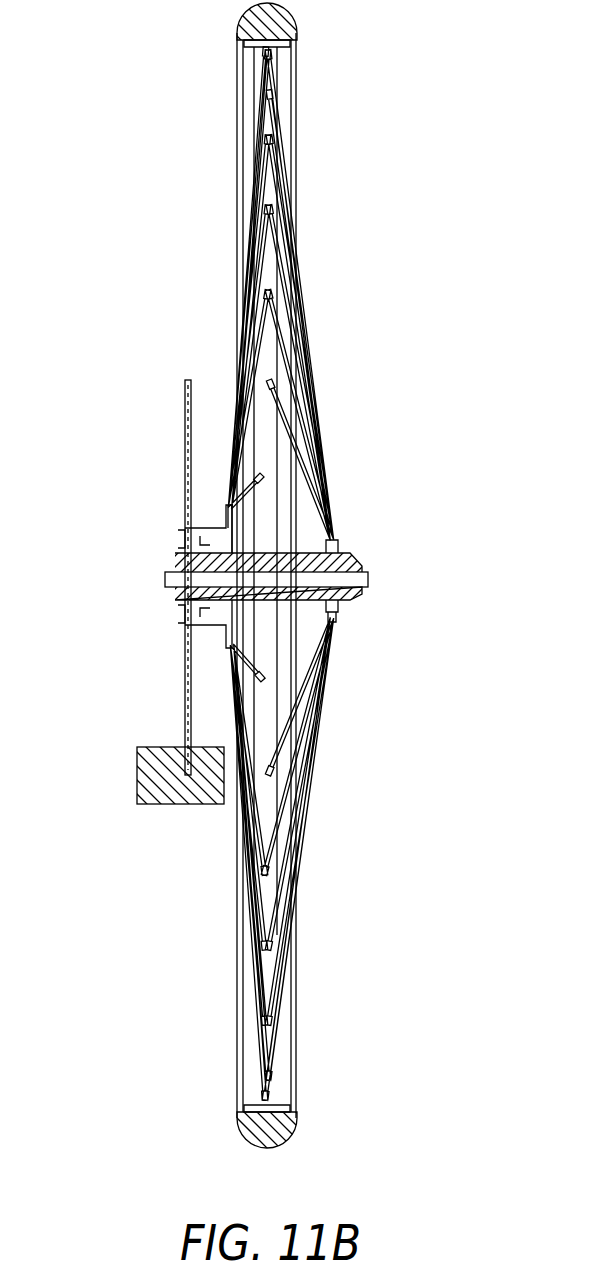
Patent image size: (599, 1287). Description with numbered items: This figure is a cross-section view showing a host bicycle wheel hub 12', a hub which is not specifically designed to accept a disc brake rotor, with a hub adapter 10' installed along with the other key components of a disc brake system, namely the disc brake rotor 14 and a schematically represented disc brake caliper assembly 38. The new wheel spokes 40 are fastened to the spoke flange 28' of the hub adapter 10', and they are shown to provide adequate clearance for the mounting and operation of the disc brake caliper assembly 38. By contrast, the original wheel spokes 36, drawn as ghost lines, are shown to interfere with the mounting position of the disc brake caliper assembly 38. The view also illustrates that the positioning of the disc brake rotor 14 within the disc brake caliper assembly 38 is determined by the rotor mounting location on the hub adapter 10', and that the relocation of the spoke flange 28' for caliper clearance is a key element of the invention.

The hub adapter 10' is at (164, 557).
The host bicycle wheel hub 12' is at (287, 568).
The disc brake rotor 14 is at (185, 420).
The spoke flange 28' is at (178, 447).
The original wheel spokes 36 is at (222, 853).
The disc brake caliper assembly 38 is at (137, 790).
The new wheel spokes 40 is at (235, 348).